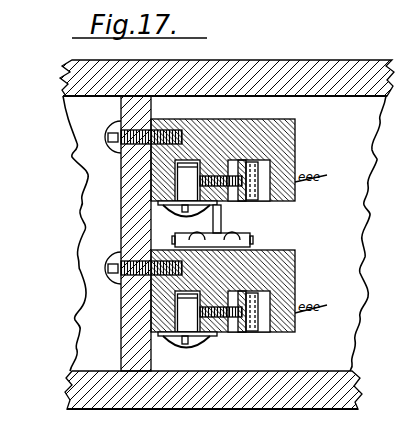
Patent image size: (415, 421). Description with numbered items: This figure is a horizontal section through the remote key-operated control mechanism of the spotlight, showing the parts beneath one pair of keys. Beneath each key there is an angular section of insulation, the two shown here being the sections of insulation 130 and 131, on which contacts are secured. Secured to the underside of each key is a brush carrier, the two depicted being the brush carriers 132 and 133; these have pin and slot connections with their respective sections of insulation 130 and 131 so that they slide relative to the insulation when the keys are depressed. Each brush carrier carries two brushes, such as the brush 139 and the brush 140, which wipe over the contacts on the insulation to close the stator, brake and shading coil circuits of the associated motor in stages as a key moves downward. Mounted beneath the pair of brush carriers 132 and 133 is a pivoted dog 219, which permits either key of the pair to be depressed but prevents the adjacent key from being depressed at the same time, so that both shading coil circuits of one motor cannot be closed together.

The angular section of insulation 130 is at (250, 124).
The angular section of insulation 131 is at (270, 274).
The brush carrier 132 is at (150, 197).
The brush carrier 133 is at (152, 311).
The brush 139 is at (240, 335).
The brush 140 is at (254, 199).
The pivoted dog 219 is at (221, 224).